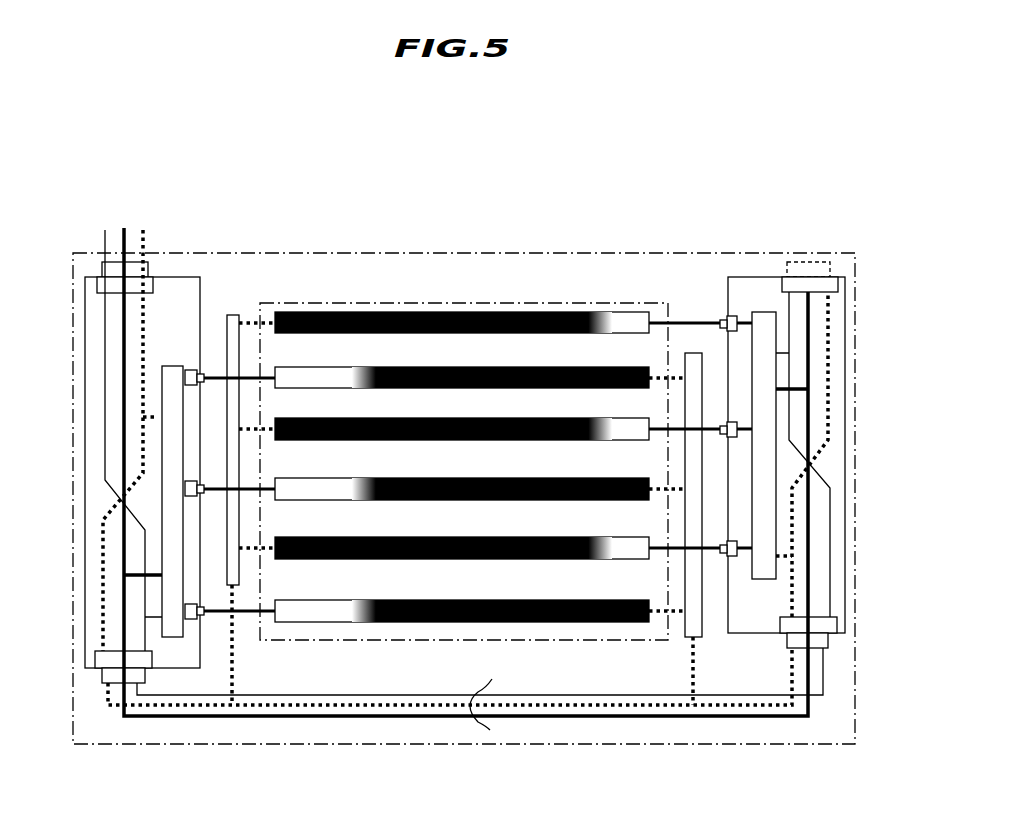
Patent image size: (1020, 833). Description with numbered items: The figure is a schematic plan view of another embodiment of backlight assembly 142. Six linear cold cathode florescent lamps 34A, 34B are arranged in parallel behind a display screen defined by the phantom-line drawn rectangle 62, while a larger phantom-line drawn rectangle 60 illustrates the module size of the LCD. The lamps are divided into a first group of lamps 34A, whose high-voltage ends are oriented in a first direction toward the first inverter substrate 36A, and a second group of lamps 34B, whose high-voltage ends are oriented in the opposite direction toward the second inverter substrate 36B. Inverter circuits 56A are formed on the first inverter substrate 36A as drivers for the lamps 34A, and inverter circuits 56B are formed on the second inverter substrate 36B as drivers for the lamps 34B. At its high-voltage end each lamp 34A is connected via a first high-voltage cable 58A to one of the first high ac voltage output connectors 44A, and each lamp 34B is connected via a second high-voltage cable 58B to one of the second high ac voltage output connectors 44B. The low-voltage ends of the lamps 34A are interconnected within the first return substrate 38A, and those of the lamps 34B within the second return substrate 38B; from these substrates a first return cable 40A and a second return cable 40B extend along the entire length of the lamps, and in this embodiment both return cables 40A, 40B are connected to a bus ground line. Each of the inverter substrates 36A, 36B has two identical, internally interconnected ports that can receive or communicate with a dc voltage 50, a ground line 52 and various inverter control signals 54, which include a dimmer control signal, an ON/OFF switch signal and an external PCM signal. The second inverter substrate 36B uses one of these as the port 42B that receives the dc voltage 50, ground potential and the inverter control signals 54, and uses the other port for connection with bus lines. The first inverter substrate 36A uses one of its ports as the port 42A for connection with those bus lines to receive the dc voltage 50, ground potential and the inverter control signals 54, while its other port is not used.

The backlight assembly 142 is at (668, 200).
The cold cathode florescent lamps 34A is at (350, 312).
The cold cathode florescent lamps 34B is at (412, 367).
The first inverter substrate 36A is at (845, 300).
The second inverter substrate 36B is at (85, 350).
The first return substrate 38A is at (233, 315).
The second return substrate 38B is at (692, 353).
The first return cable 40A is at (237, 663).
The second return cable 40B is at (690, 673).
The port 42A is at (785, 622).
The port 42B is at (97, 287).
The first high ac voltage output connectors 44A is at (732, 331).
The second high ac voltage output connectors 44B is at (190, 386).
The dc voltage 50 is at (124, 228).
The ground line 52 is at (145, 238).
The inverter control signals 54 is at (103, 232).
The inverter circuits 56A is at (760, 312).
The inverter circuits 56B is at (170, 637).
The first high-voltage cable 58A is at (660, 325).
The second high-voltage cable 58B is at (248, 377).
The phantom-line drawn rectangle 60 is at (553, 252).
The phantom-line drawn rectangle 62 is at (592, 302).